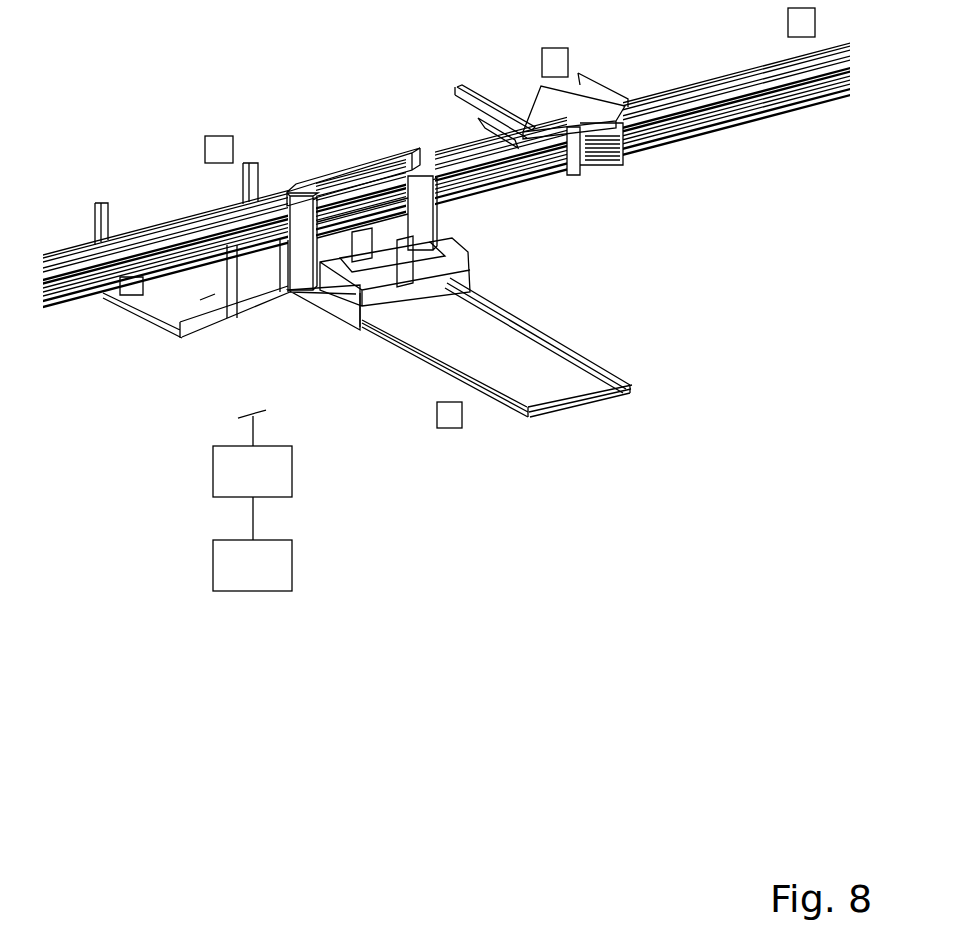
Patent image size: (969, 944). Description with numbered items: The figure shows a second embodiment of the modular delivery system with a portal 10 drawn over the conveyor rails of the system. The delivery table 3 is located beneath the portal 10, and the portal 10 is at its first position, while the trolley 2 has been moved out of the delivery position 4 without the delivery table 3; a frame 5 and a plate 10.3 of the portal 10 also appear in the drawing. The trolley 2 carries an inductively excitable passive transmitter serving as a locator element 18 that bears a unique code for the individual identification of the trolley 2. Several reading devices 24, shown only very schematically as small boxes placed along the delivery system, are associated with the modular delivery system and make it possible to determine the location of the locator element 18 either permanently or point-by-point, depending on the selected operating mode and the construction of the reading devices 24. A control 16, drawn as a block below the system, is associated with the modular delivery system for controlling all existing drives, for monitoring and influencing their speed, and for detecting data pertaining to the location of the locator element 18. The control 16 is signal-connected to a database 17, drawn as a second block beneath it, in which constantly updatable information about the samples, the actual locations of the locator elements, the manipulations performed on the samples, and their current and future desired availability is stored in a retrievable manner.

The trolley 2 is at (532, 98).
The delivery table 3 is at (426, 280).
The delivery position 4 is at (210, 191).
The extension frame 5 is at (594, 422).
The portal 10 is at (430, 213).
The gripper plate 10.3 is at (303, 277).
The control 16 is at (228, 472).
The database 17 is at (233, 568).
The locator element 18 is at (553, 50).
The reading devices 24 is at (803, 22).